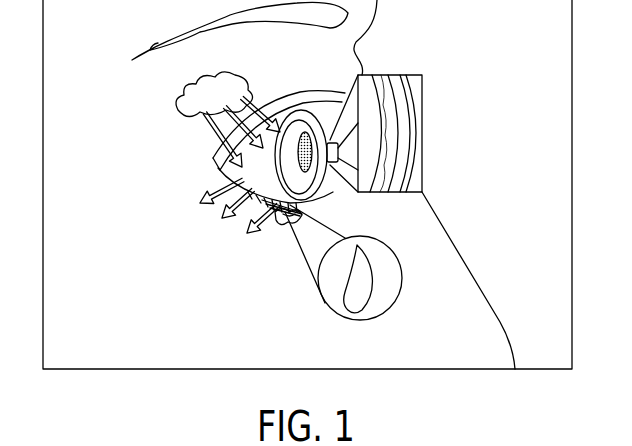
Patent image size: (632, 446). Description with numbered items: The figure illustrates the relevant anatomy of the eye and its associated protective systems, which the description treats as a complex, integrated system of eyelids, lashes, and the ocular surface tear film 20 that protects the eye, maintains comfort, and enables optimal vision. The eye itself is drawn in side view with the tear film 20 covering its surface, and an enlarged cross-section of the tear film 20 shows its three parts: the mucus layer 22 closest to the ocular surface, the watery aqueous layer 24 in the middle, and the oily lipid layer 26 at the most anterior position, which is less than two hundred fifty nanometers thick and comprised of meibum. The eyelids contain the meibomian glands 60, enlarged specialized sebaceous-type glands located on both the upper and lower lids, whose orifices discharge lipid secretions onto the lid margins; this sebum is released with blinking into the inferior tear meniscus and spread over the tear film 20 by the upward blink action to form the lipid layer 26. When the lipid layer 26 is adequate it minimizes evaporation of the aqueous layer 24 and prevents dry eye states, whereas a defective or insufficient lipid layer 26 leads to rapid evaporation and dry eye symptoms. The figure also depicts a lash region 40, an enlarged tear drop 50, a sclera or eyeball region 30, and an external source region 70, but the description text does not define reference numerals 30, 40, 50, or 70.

The tear film 20 is at (383, 74).
The mucus layer 22 is at (388, 115).
The watery (aqueous) layer 24 is at (398, 132).
The oily (lipid) layer 26 is at (408, 163).
The eye 30 is at (333, 191).
The eyelashes / tear film 40 is at (292, 203).
The tear drop (enlarged) 50 is at (390, 305).
The meibomian glands 60 is at (250, 258).
The incident light / environment 70 is at (178, 102).